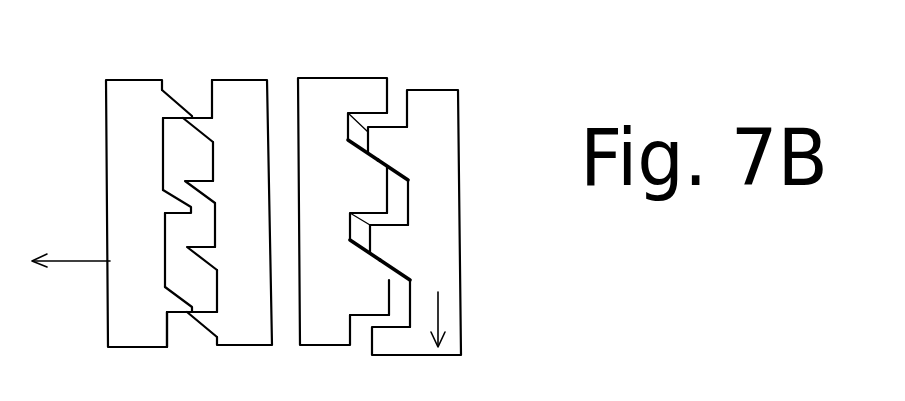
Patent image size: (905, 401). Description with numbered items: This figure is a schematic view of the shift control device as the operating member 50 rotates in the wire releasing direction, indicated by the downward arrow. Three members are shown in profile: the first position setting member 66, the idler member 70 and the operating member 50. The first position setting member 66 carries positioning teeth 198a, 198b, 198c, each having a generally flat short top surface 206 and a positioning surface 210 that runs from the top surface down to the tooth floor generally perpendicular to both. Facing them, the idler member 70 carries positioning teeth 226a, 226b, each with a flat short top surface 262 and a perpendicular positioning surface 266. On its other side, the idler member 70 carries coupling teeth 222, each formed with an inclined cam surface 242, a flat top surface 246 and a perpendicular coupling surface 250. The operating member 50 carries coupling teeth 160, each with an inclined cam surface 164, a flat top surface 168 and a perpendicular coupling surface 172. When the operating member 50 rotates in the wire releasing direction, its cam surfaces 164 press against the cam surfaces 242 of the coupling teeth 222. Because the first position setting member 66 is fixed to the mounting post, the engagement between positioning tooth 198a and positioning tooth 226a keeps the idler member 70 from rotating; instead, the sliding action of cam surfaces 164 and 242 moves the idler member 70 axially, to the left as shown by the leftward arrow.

The operating member 50 is at (447, 89).
The first position setting member 66 is at (235, 78).
The idler member 70 is at (113, 80).
The coupling tooth 160 is at (378, 142).
The cam surface 164 is at (402, 172).
The top surface 168 is at (348, 113).
The coupling surface 172 is at (398, 200).
The positioning tooth 198a is at (188, 120).
The positioning tooth 198b is at (188, 183).
The positioning tooth 198c is at (188, 249).
The top surface 206 is at (183, 121).
The positioning surface 210 is at (193, 115).
The coupling tooth 222 is at (375, 176).
The positioning tooth 226a is at (167, 105).
The positioning tooth 226b is at (167, 203).
The cam surface 242 is at (352, 151).
The top surface 246 is at (386, 188).
The coupling surface 250 is at (349, 213).
The top surface 262 is at (190, 116).
The positioning surface 266 is at (163, 121).